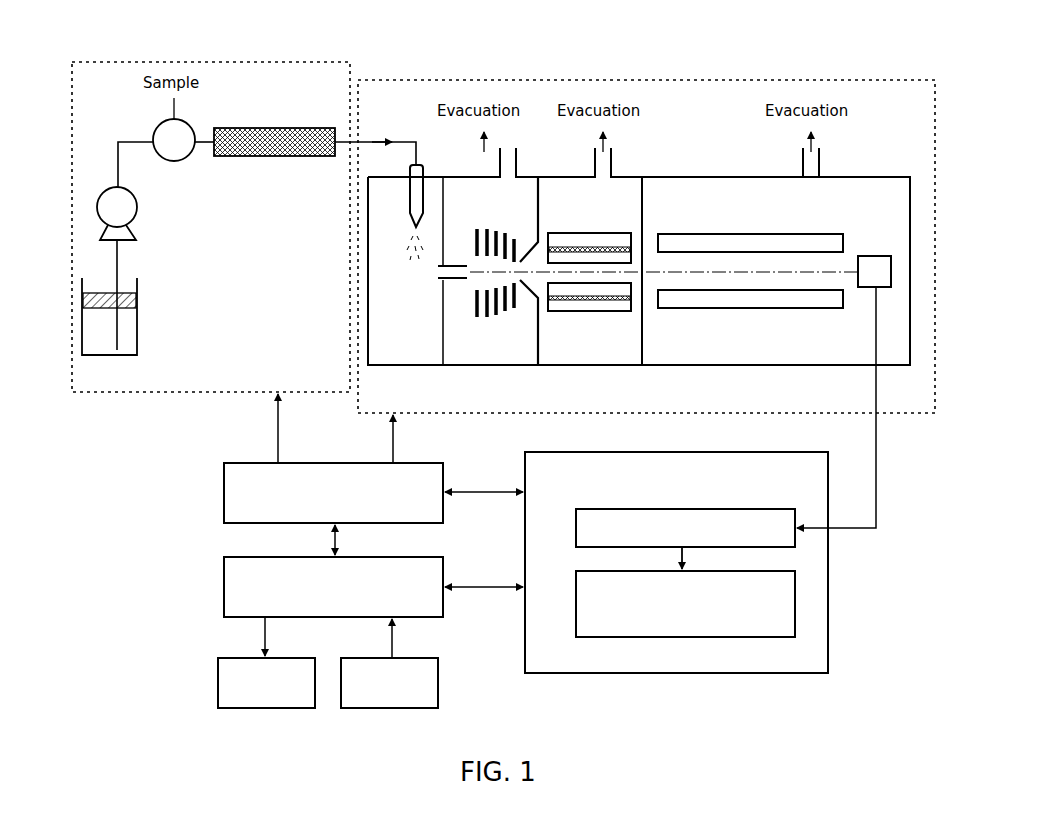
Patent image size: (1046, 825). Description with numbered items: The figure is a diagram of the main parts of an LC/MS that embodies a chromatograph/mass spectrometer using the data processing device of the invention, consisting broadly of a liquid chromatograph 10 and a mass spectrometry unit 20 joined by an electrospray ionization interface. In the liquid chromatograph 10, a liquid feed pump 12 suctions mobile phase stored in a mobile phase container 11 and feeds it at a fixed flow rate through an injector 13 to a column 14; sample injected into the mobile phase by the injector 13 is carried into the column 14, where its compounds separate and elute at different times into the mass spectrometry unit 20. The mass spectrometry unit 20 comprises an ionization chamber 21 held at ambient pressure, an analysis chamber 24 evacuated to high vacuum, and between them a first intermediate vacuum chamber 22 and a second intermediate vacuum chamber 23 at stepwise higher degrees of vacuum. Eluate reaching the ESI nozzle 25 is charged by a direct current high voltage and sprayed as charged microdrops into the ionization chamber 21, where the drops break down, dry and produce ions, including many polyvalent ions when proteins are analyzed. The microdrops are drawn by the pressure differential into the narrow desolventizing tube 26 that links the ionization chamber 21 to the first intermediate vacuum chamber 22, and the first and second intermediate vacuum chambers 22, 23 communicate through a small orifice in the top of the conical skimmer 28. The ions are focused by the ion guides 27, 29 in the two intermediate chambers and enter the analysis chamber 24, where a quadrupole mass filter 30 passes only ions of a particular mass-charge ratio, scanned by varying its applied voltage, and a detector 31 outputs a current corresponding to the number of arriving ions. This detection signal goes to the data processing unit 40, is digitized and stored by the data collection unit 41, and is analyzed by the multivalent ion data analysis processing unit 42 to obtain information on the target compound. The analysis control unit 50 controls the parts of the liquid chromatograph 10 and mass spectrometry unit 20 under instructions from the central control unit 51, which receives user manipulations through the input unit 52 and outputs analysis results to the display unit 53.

The liquid chromatograph 10 is at (230, 62).
The mobile phase container 11 is at (101, 357).
The liquid feed pump 12 is at (138, 217).
The injector 13 is at (184, 158).
The column 14 is at (275, 128).
The mass spectrometry unit 20 is at (745, 80).
The ionization chamber 21 is at (403, 355).
The first intermediate vacuum chamber 22 is at (480, 353).
The second intermediate vacuum chamber 23 is at (565, 353).
The analysis chamber 24 is at (678, 355).
The ESI nozzle 25 is at (409, 205).
The desolventizing tube 26 is at (440, 281).
The ion guide 27 is at (482, 226).
The skimmer 28 is at (527, 290).
The ion guide 29 is at (578, 234).
The quadrupole mass filter 30 is at (783, 233).
The detector 31 is at (877, 256).
The data processing unit 40 is at (828, 612).
The data collection unit 41 is at (576, 524).
The multivalent ion data analysis processing unit 42 is at (576, 594).
The analysis control unit 50 is at (224, 482).
The central control unit 51 is at (224, 578).
The input unit 52 is at (438, 674).
The display unit 53 is at (218, 676).